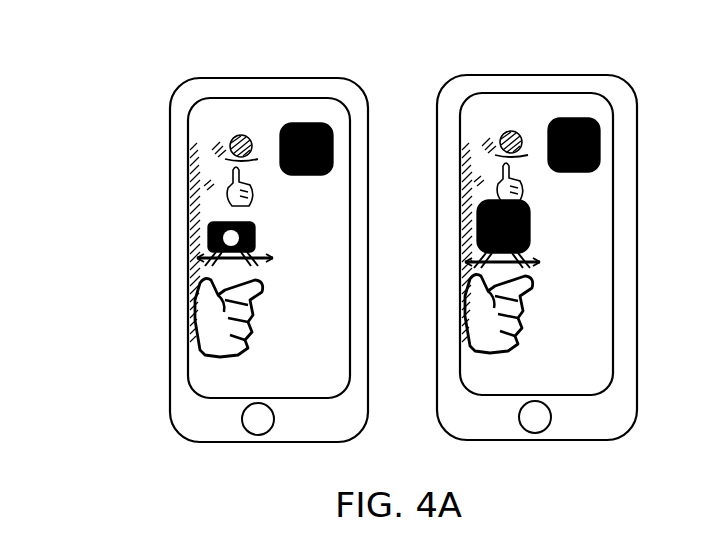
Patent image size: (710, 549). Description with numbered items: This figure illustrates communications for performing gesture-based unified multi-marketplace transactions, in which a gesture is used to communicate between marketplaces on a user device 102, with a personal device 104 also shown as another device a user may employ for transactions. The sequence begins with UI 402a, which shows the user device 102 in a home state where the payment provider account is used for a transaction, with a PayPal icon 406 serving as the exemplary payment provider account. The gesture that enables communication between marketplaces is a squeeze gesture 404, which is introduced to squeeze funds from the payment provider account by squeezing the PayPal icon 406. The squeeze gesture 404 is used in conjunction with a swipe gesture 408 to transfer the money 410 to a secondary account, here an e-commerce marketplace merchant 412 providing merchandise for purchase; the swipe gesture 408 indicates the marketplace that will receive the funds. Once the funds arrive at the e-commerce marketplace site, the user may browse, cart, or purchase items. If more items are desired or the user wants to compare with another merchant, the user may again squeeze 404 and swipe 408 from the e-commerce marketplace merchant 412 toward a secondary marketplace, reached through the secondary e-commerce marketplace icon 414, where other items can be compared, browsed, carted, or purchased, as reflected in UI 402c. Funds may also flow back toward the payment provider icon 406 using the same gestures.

The user device 102 is at (363, 99).
The personal device 104 is at (618, 89).
The UI 402a is at (284, 294).
The UI 402c is at (559, 321).
The squeeze gesture 404 is at (198, 348).
The PayPal icon 406 is at (207, 262).
The swipe gesture 408 is at (200, 184).
The money 410 is at (247, 133).
The e-commerce marketplace merchant 412 is at (333, 147).
The secondary e-commerce marketplace icon 414 is at (600, 140).